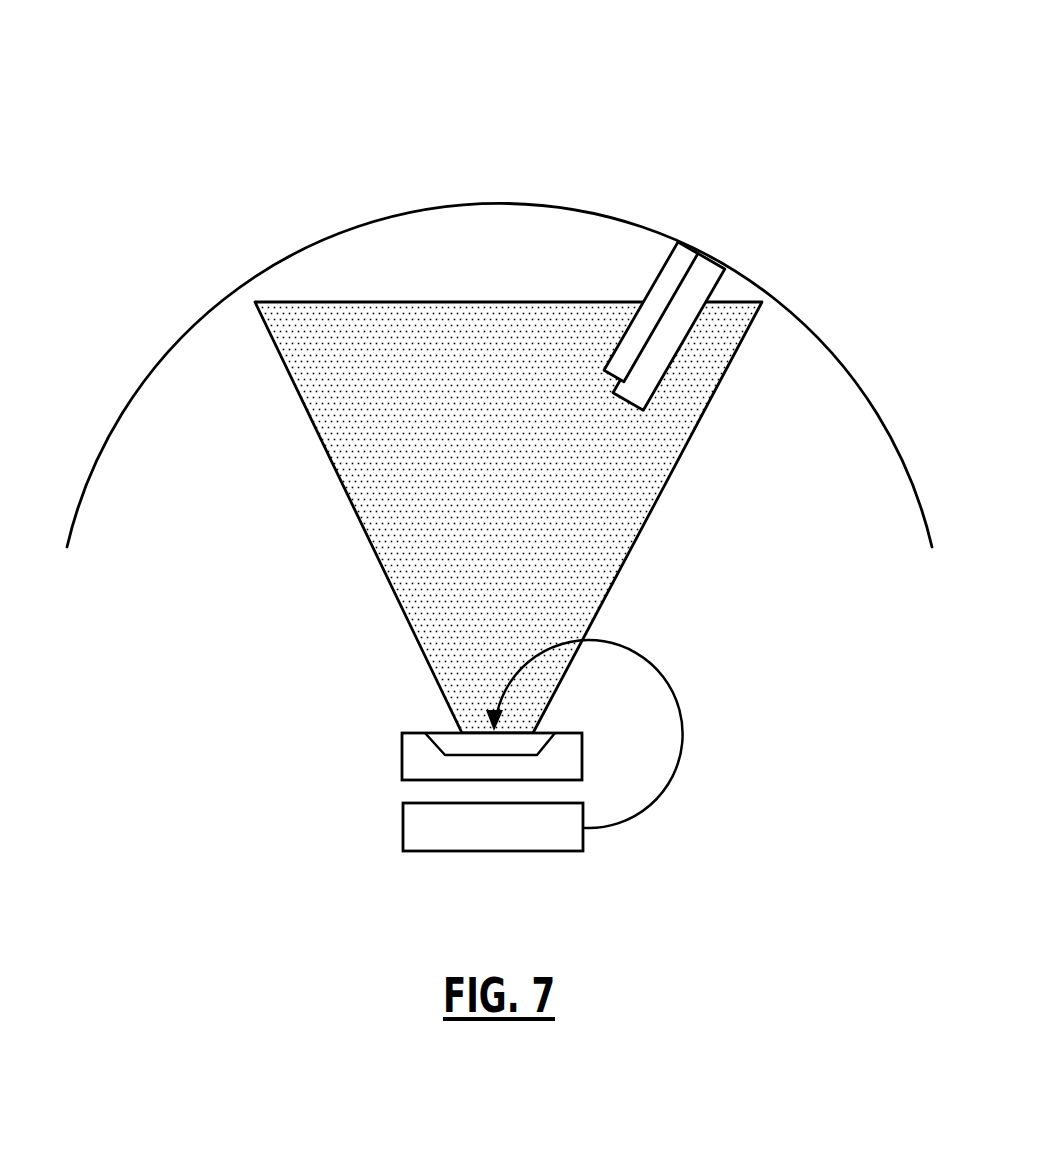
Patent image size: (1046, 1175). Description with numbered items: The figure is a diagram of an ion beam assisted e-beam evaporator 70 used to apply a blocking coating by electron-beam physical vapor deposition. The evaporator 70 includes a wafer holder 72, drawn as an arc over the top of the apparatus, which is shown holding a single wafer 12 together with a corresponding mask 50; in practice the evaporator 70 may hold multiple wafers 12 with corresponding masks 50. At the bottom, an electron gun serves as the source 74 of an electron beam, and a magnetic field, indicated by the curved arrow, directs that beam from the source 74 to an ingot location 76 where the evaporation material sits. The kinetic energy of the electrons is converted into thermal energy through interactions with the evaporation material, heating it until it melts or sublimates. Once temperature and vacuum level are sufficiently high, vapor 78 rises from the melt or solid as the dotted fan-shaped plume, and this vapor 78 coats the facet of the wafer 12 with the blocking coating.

The ion beam assisted e-beam evaporator 70 is at (583, 90).
The wafer holder 72 is at (858, 380).
The vapor 78 is at (377, 557).
The mask 50 is at (706, 277).
The wafer 12 is at (674, 256).
The ingot location 76 is at (433, 747).
The source 74 is at (423, 852).